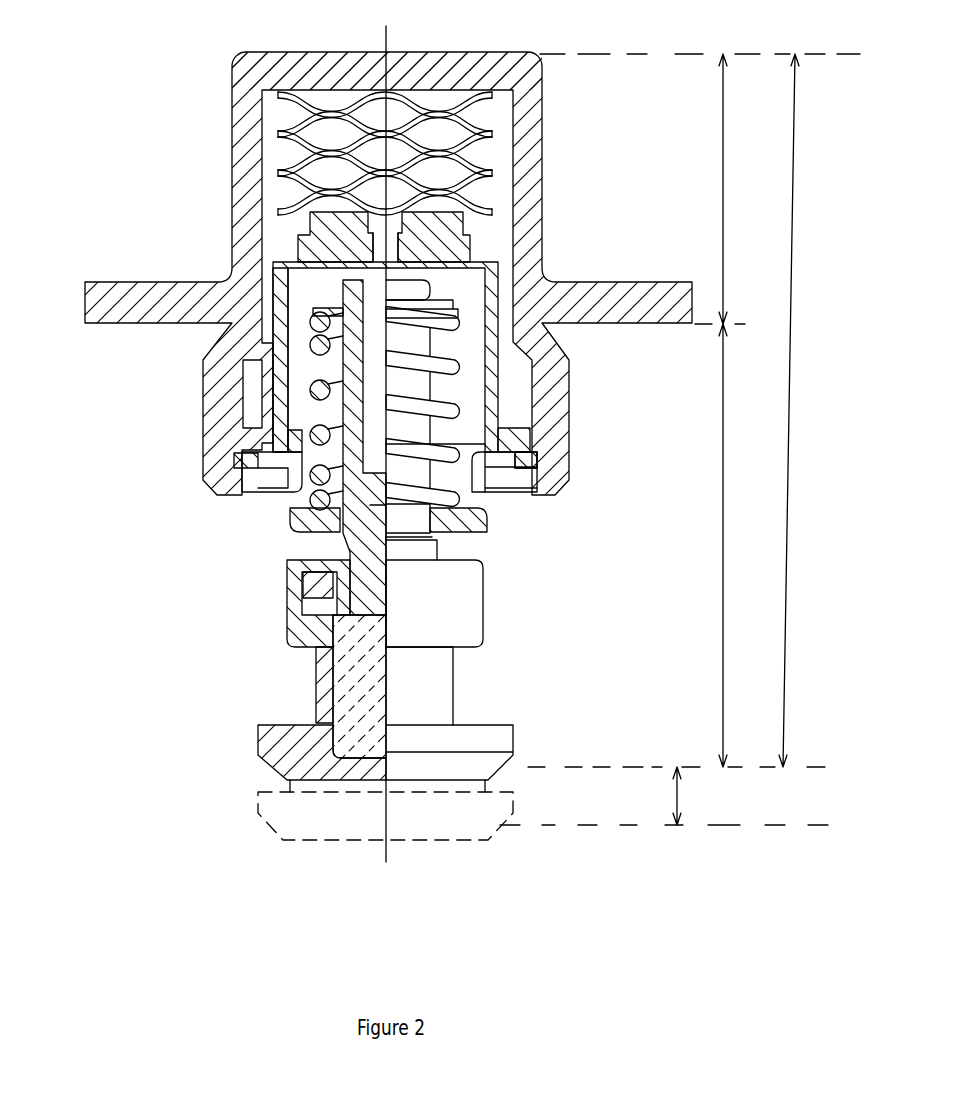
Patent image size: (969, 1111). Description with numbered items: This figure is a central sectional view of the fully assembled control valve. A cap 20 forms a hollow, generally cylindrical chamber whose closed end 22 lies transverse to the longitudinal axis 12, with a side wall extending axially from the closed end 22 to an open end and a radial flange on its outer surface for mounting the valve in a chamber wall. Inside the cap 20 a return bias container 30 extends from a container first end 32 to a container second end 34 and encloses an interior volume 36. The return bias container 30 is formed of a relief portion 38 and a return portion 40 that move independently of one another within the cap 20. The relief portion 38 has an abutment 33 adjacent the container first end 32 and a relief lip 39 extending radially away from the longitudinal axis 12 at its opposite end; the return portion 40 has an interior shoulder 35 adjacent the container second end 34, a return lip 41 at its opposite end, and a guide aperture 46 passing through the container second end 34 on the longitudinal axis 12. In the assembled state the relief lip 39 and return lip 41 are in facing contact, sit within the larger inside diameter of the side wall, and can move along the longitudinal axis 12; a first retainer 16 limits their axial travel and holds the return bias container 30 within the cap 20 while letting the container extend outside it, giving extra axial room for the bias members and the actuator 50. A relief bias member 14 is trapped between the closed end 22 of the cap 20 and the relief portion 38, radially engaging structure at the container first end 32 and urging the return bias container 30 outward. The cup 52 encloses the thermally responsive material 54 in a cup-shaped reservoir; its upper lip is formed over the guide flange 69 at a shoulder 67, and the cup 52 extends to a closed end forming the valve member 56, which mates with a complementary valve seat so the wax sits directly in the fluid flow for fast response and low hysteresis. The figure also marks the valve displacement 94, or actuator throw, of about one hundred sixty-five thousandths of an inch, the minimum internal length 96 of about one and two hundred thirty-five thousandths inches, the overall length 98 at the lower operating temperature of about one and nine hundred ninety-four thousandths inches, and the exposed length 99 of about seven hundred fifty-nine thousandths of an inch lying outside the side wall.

The longitudinal axis 12 is at (388, 40).
The relief bias member 14 is at (280, 135).
The first retainer 16 is at (540, 458).
The cap 20 is at (543, 132).
The closed end 22 is at (240, 75).
The return bias container 30 is at (268, 413).
The container first end 32 is at (473, 230).
The abutment 33 is at (352, 268).
The container second end 34 is at (487, 513).
The interior shoulder 35 is at (308, 504).
The interior volume 36 is at (478, 397).
The relief portion 38 is at (279, 330).
The relief lip 39 is at (533, 438).
The return portion 40 is at (288, 510).
The return lip 41 is at (533, 453).
The guide aperture 46 is at (345, 540).
The actuator 50 is at (503, 600).
The cup 52 is at (267, 743).
The thermally responsive material 54 is at (340, 673).
The valve member 56 is at (265, 755).
The shoulder 67 is at (290, 573).
The guide flange 69 is at (303, 587).
The valve displacement 94 is at (679, 800).
The minimum internal length 96 is at (727, 522).
The overall length 98 is at (814, 410).
The exposed length 99 is at (725, 193).